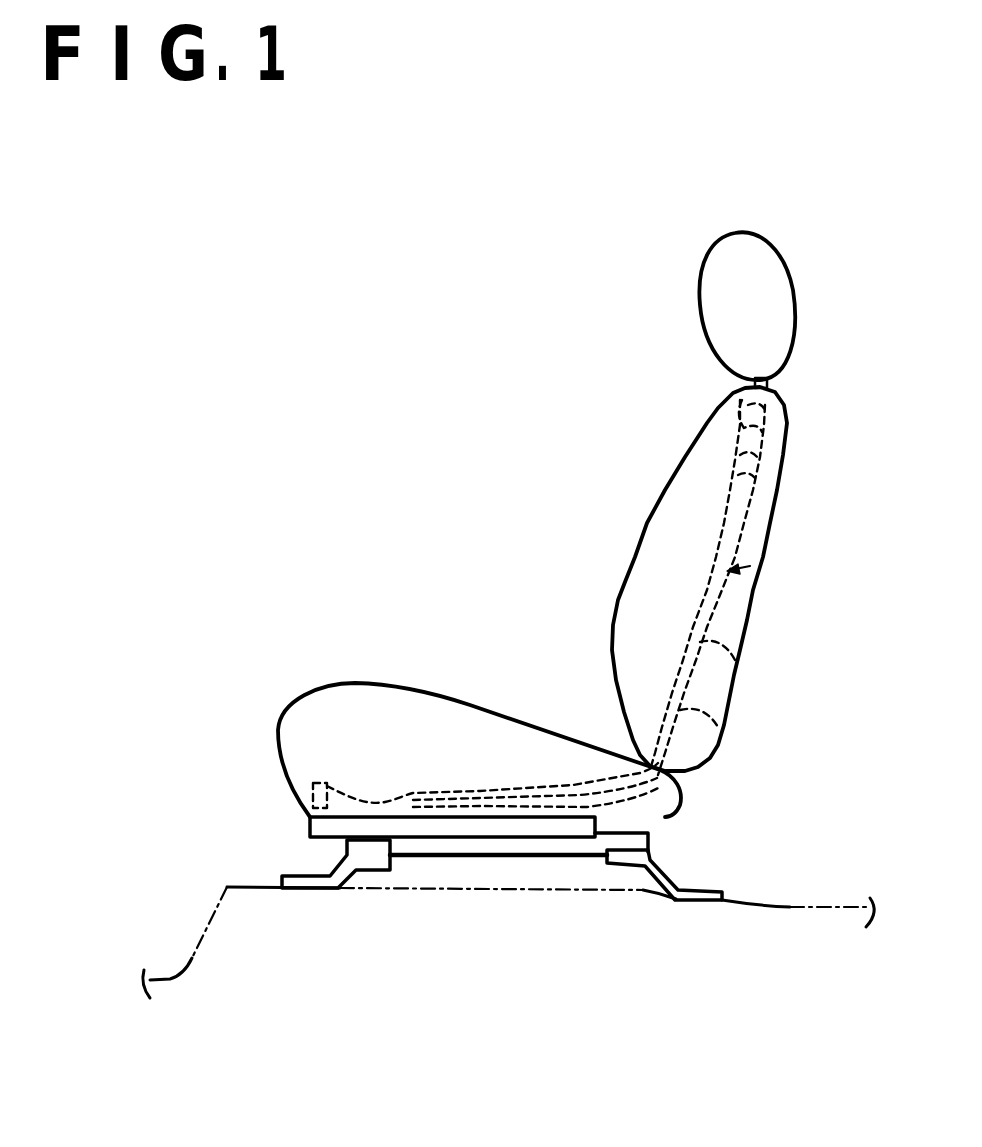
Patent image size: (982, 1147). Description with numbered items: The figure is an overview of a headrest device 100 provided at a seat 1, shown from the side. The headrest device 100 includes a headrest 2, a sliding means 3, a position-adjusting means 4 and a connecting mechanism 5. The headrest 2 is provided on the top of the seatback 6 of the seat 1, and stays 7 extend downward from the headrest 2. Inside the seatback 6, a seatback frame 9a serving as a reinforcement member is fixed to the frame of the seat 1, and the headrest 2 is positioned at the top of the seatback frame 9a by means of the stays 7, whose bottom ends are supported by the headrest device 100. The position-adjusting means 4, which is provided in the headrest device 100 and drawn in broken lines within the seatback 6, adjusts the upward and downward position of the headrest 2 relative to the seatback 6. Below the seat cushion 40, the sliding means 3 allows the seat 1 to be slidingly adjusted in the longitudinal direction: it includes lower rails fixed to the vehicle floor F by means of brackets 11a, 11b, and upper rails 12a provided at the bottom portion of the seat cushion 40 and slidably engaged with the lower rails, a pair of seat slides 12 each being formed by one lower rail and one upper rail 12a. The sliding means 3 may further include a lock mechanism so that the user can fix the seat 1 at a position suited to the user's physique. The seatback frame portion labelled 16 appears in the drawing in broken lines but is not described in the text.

The seat 1 is at (476, 426).
The headrest 2 is at (787, 282).
The sliding means 3 is at (662, 838).
The position-adjusting means 4 is at (767, 487).
The connecting mechanism 5 is at (761, 698).
The seatback 6 is at (755, 603).
The stays 7 is at (767, 387).
The seatback frame 9a is at (716, 406).
The bracket 11a is at (310, 870).
The bracket 11b is at (667, 871).
The seat slide 12 is at (305, 816).
The upper rail 12a is at (479, 834).
The side frame 16 is at (742, 660).
The seat cushion 40 is at (392, 703).
The headrest device 100 is at (762, 563).
The vehicle floor F is at (165, 980).